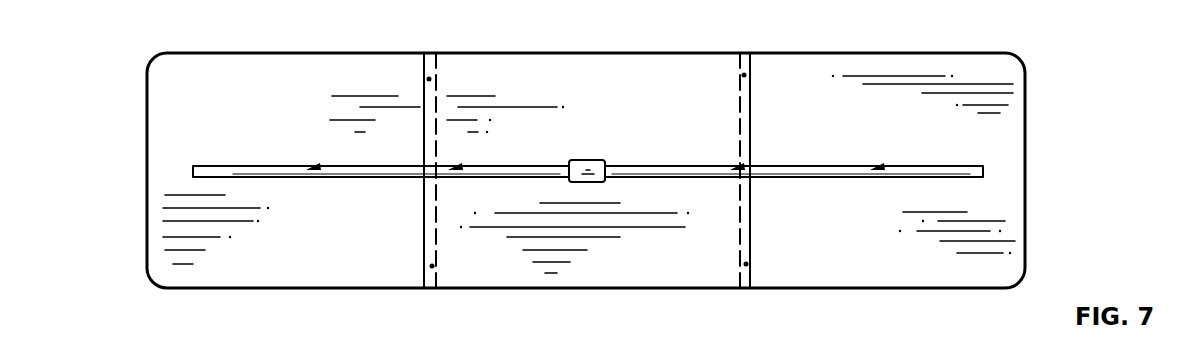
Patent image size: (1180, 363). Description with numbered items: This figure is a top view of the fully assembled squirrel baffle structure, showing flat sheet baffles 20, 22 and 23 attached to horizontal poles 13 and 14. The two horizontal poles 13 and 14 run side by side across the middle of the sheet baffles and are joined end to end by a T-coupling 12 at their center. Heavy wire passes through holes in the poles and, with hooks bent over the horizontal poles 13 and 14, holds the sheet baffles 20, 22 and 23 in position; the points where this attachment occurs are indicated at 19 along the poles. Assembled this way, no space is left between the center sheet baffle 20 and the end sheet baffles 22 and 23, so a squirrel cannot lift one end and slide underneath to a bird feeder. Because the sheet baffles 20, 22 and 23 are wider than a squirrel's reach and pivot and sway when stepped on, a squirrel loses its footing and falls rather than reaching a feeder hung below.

The sheet baffle 22 is at (229, 53).
The sheet baffle 20 is at (562, 53).
The sheet baffle 23 is at (969, 53).
The T-coupling 12 is at (587, 160).
The horizontal pole 13 is at (343, 178).
The horizontal pole 14 is at (833, 178).
The outlet openings 19 is at (313, 178).